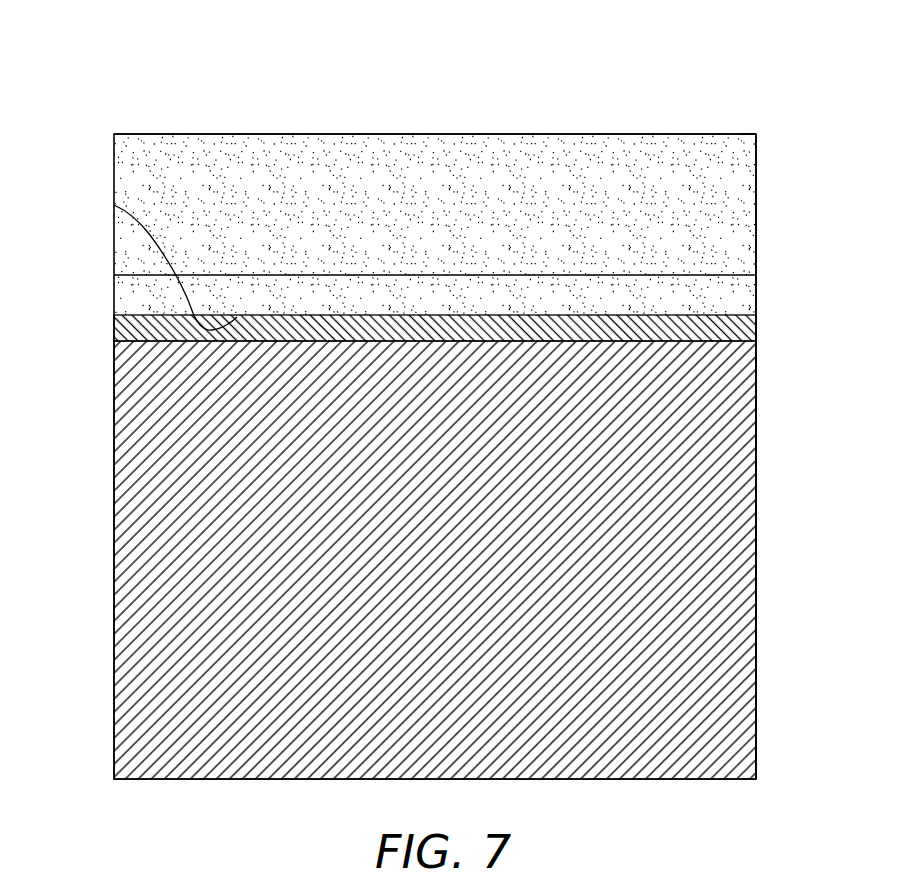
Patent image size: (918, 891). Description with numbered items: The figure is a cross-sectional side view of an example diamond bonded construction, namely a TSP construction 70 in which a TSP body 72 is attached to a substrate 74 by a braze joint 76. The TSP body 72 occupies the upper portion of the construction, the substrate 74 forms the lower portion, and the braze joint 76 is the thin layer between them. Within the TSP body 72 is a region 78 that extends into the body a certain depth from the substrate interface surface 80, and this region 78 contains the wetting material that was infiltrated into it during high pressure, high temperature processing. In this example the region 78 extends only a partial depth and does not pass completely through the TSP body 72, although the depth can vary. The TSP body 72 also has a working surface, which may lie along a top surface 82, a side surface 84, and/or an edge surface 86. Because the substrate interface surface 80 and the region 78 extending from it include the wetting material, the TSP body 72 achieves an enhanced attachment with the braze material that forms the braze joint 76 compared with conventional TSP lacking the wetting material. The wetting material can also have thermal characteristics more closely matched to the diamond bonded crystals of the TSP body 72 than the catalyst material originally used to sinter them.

The TSP construction 70 is at (486, 110).
The TSP body 72 is at (738, 202).
The substrate 74 is at (137, 530).
The braze joint 76 is at (122, 327).
The region 78 is at (122, 295).
The substrate interface surface 80 is at (114, 205).
The top surface 82 is at (290, 133).
The side surface 84 is at (757, 233).
The edge surface 86 is at (757, 134).